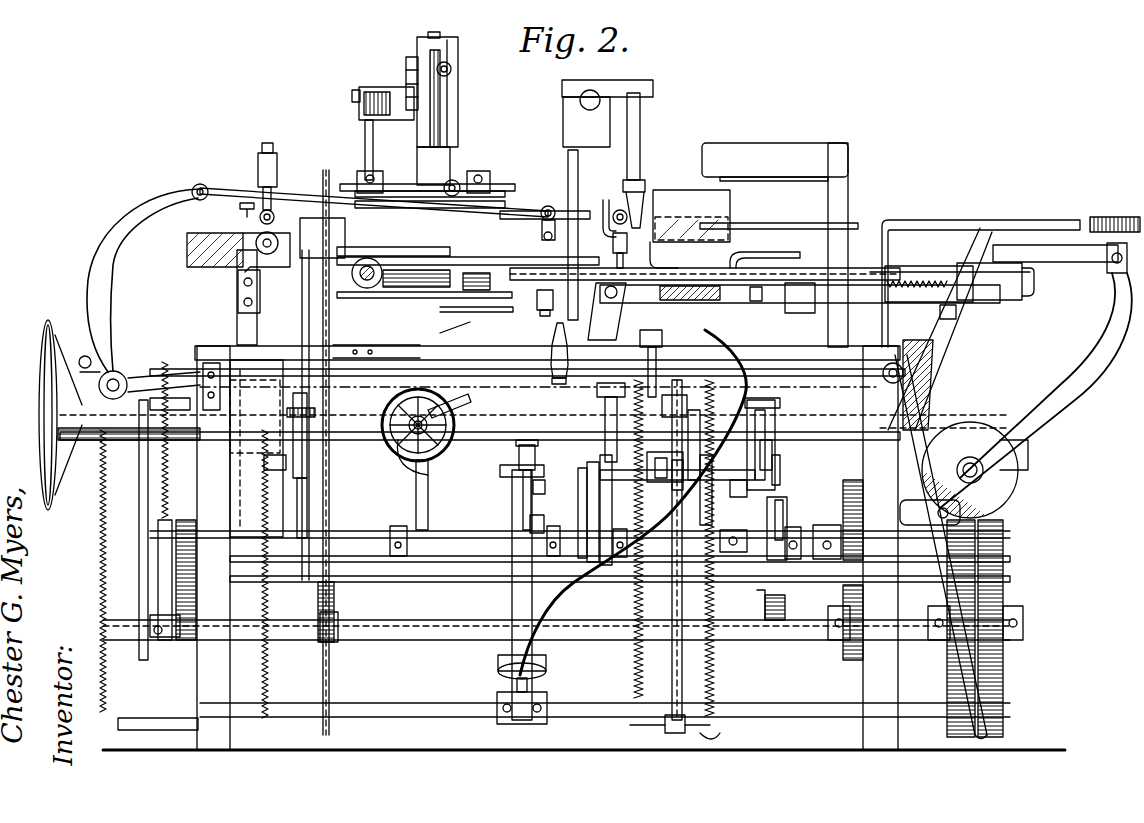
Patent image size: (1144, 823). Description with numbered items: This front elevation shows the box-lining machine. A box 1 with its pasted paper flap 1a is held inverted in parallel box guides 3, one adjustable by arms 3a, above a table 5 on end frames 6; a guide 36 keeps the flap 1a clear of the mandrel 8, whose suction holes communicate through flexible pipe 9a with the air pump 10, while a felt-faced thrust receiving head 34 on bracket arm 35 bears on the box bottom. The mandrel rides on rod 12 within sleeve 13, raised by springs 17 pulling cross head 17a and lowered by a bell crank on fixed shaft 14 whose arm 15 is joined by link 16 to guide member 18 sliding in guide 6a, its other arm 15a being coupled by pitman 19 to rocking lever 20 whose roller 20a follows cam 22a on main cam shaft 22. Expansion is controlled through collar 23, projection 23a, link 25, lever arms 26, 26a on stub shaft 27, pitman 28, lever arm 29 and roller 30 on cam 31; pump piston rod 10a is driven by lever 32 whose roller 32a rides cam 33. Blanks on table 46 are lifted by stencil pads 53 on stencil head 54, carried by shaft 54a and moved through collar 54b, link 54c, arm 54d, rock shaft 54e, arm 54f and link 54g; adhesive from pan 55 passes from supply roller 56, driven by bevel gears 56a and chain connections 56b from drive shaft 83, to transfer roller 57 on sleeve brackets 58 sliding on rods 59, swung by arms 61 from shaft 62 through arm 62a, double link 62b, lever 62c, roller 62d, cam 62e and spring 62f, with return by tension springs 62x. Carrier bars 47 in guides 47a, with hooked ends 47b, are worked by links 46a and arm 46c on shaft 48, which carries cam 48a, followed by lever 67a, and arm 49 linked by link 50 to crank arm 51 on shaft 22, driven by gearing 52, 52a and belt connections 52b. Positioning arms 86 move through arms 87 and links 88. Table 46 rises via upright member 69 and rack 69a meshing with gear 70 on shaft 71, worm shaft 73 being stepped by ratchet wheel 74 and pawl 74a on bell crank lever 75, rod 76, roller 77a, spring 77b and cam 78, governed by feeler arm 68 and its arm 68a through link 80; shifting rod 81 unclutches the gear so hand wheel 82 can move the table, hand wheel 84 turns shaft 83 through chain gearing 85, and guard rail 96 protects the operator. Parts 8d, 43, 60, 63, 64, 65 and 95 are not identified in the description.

The box 1 is at (735, 222).
The paper flap 1a is at (668, 257).
The box guides 3 is at (766, 220).
The arms 3a is at (800, 223).
The table 5 is at (798, 353).
The end frames 6 is at (205, 683).
The guide 6a is at (707, 490).
The mandrel 8 is at (720, 300).
The shaft collar 8d is at (742, 300).
The flexible pipe 9a is at (772, 455).
The pump 10 is at (512, 598).
The piston rod 10a is at (525, 495).
The rod 12 is at (680, 652).
The tubular shaft 13 is at (700, 410).
The fixed shaft 14 is at (780, 468).
The arm 15 is at (672, 490).
The arm 15a is at (775, 420).
The link 16 is at (627, 539).
The springs 17 is at (636, 650).
The cross head 17a is at (720, 735).
The guide member 18 is at (677, 462).
The pitman 19 is at (778, 432).
The rocking lever 20 is at (772, 505).
The roller 20a is at (788, 606).
The main cam shaft 22 is at (727, 535).
The cam 22a is at (777, 522).
The collar 23 is at (705, 395).
The projecting portion 23a is at (642, 329).
The link 25 is at (648, 337).
The lever arm 26 is at (640, 338).
The lever arm 26a is at (605, 410).
The stub shaft 27 is at (605, 395).
The pitman 28 is at (600, 460).
The lever arm 29 is at (590, 515).
The roller 30 is at (595, 608).
The cam 31 is at (598, 498).
The lever 32 is at (528, 455).
The roller 32a is at (545, 490).
The cam 33 is at (530, 528).
The thrust receiving head 34 is at (712, 205).
The bracket arm 35 is at (768, 156).
The guide 36 is at (705, 266).
The filling head 43 is at (640, 190).
The table 46 is at (406, 299).
The links 46a is at (1060, 263).
The arm 46c is at (1083, 380).
The carrier bars 47 is at (905, 272).
The guides 47a is at (920, 272).
The hooked ends 47b is at (605, 236).
The shaft 48 is at (990, 482).
The cam 48a is at (1020, 476).
The arm 49 is at (945, 435).
The link 50 is at (1012, 456).
The crank arm 51 is at (920, 532).
The gearing 52 is at (850, 494).
The gearing 52a is at (848, 660).
The belt connections 52b is at (993, 518).
The stencil pads 53 is at (472, 228).
The stencil head 54 is at (455, 182).
The shaft 54a is at (455, 118).
The collar 54b is at (425, 60).
The link 54c is at (437, 69).
The arm 54d is at (418, 98).
The rock shaft 54e is at (368, 115).
The arm 54f is at (372, 90).
The link 54g is at (372, 170).
The pan 55 is at (212, 266).
The supply roller 56 is at (228, 247).
The bevel gears 56a is at (275, 200).
The chain and sprocket connections 56b is at (340, 616).
The transfer roller 57 is at (543, 238).
The sleeve brackets 58 is at (556, 208).
The rods 59 is at (512, 211).
The bar 60 is at (328, 196).
The arms 61 is at (100, 244).
The shaft 62 is at (120, 370).
The arm 62a is at (150, 380).
The double link connection 62b is at (160, 440).
The lever 62c is at (165, 582).
The roller 62d is at (178, 637).
The cam 62e is at (165, 556).
The spring 62f is at (160, 480).
The tension springs 62x is at (85, 571).
The bar 63 is at (500, 257).
The block 64 is at (537, 300).
The block 65 is at (543, 316).
The lever 67a is at (932, 368).
The feeler arm 68 is at (426, 250).
The arm 68a is at (352, 286).
The upright member 69 is at (448, 328).
The rack 69a is at (425, 340).
The gear 70 is at (408, 400).
The shaft 71 is at (438, 424).
The worm shaft 73 is at (265, 462).
The ratchet wheel 74 is at (287, 440).
The pawl 74a is at (282, 478).
The bell crank lever 75 is at (308, 490).
The rod 76 is at (300, 505).
The roller 77a is at (280, 502).
The spring 77b is at (270, 660).
The cam 78 is at (312, 590).
The link 80 is at (298, 290).
The shifting rod 81 is at (430, 388).
The hand wheel 82 is at (430, 452).
The drive shaft 83 is at (422, 630).
The hand wheel 84 is at (45, 325).
The chain and sprocket gearing 85 is at (143, 660).
The positioning arms 86 is at (745, 262).
The arms 87 is at (800, 310).
The links 88 is at (950, 316).
The block 95 is at (1025, 298).
The guard rail 96 is at (1038, 222).